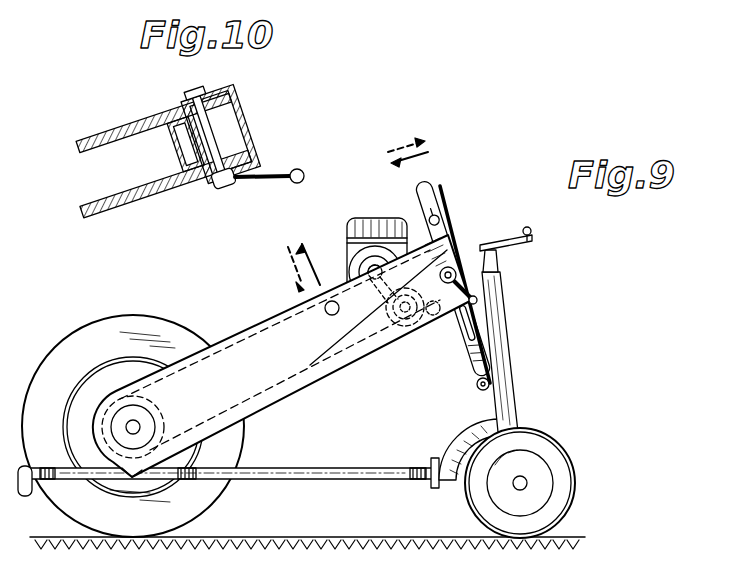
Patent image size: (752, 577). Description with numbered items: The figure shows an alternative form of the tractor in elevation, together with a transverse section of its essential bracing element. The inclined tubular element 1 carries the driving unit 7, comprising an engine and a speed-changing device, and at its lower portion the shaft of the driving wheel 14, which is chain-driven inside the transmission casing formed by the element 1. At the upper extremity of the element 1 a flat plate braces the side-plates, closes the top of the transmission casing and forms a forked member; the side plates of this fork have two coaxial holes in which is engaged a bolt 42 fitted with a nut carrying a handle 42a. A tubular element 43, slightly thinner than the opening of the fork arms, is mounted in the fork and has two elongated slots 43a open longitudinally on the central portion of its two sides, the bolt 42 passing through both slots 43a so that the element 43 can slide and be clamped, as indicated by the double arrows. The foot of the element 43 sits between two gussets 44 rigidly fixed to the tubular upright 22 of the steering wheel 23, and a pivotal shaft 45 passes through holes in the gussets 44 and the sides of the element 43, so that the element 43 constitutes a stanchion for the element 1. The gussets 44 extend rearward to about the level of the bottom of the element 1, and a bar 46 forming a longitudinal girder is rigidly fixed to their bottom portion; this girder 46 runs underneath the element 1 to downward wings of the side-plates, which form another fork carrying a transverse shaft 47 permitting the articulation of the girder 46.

In FIG. 9, the tubular element 1 is at (240, 336).
In FIG. 9, the driving unit 7 is at (358, 214).
In FIG. 9, the driving wheel 14 is at (67, 348).
In FIG. 9, the tubular upright 22 is at (500, 300).
In FIG. 9, the steering wheel 23 is at (546, 452).
In FIG. 9, the bolt 42 is at (452, 264).
In FIG. 10, the handle 42a is at (248, 180).
In FIG. 9, the tubular element 43 is at (424, 182).
In FIG. 9, the elongated slots 43a is at (440, 230).
In FIG. 9, the gussets 44 is at (442, 442).
In FIG. 9, the pivotal shaft 45 is at (476, 384).
In FIG. 9, the bar 46 is at (293, 467).
In FIG. 9, the transverse shaft 47 is at (128, 478).